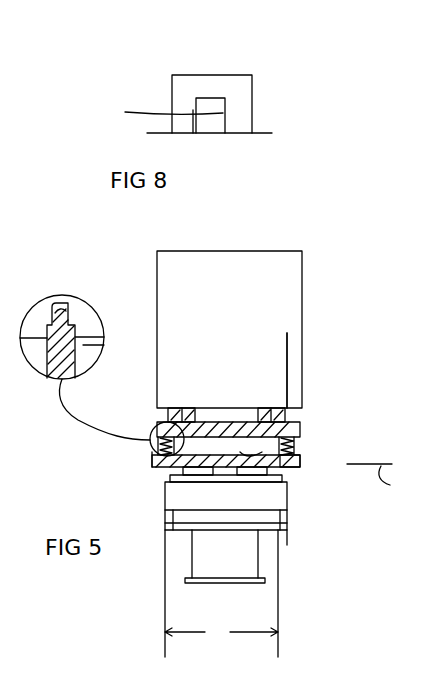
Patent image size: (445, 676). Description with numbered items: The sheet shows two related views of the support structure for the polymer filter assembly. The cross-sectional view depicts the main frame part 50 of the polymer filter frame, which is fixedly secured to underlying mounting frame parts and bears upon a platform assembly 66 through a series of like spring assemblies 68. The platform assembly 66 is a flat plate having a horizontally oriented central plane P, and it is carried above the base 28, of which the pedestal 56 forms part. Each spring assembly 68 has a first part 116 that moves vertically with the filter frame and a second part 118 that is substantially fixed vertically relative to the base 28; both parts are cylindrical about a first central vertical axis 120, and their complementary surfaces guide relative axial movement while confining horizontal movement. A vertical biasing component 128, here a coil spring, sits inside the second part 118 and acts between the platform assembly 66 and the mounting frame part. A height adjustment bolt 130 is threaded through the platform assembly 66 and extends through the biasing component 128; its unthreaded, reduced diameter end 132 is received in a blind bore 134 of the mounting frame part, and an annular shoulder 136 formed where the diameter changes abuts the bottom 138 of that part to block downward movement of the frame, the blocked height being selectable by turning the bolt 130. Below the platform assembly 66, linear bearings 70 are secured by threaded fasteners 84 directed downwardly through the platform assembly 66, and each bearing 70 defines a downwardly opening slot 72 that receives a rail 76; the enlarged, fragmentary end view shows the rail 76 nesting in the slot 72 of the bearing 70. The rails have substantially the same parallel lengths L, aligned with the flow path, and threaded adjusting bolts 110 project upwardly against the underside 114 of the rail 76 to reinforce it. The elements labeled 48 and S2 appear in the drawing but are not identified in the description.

In FIG. 8, the bearing 70 is at (213, 88).
In FIG. 5, the bearing 70 is at (166, 494).
In FIG. 8, the downwardly opening slot 72 is at (157, 105).
In FIG. 8, the rail 76 is at (212, 126).
In FIG. 5, the rail 76 is at (212, 484).
In FIG. 5, the main frame part 50 is at (236, 363).
In FIG. 5, the blind bore 134 is at (68, 304).
In FIG. 5, the annular shoulder 136 is at (49, 333).
In FIG. 5, the reduced diameter end 132 is at (63, 322).
In FIG. 5, the bottom of frame mounting part 138 is at (96, 352).
In FIG. 5, the vertical biasing component 128 is at (167, 412).
In FIG. 5, the spring assembly 68 is at (288, 393).
In FIG. 5, the first central vertical axis 120 is at (287, 348).
In FIG. 5, the threaded fastener 84 is at (297, 408).
In FIG. 5, the spring S2 is at (300, 427).
In FIG. 5, the first part 116 is at (152, 442).
In FIG. 5, the platform assembly 66 is at (299, 462).
In FIG. 5, the load cell 48 is at (251, 447).
In FIG. 5, the second part 118 is at (148, 460).
In FIG. 5, the height adjustment bolt 130 is at (168, 470).
In FIG. 5, the threaded adjusting bolt 110 is at (168, 534).
In FIG. 5, the central plane P is at (374, 483).
In FIG. 5, the base 28 is at (305, 543).
In FIG. 5, the pedestal 56 is at (277, 550).
In FIG. 5, the underside of rail 114 is at (190, 581).
In FIG. 5, the length of rail L is at (221, 633).